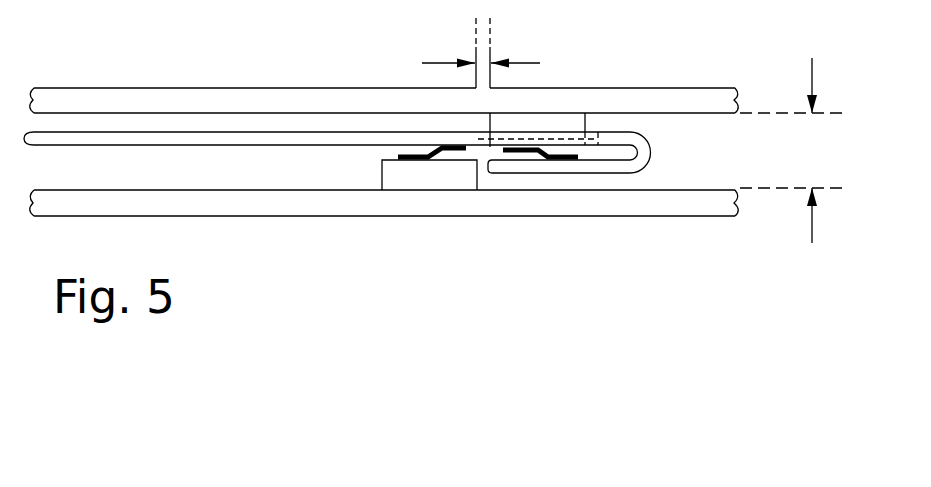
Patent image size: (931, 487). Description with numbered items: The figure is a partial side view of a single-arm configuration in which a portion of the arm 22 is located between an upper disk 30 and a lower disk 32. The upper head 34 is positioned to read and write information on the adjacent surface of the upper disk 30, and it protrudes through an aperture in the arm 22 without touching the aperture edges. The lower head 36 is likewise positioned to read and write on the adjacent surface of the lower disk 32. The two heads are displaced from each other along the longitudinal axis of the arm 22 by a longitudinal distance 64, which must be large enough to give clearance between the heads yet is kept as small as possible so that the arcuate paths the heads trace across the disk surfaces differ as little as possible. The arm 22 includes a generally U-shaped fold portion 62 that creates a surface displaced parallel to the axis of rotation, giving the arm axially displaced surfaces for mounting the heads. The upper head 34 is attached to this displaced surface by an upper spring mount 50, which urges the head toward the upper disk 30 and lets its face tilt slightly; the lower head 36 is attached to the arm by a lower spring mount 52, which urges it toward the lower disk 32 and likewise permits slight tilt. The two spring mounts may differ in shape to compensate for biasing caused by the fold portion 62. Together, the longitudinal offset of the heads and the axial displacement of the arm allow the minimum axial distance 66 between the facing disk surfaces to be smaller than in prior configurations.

The arm 22 is at (152, 146).
The upper disk 30 is at (165, 88).
The lower disk 32 is at (160, 217).
The upper head 34 is at (597, 121).
The lower head 36 is at (383, 177).
The upper spring mount 50 is at (522, 158).
The lower spring mount 52 is at (443, 158).
The fold portion 62 is at (653, 153).
The longitudinal distance 64 is at (502, 64).
The minimum axial distance 66 is at (791, 150).